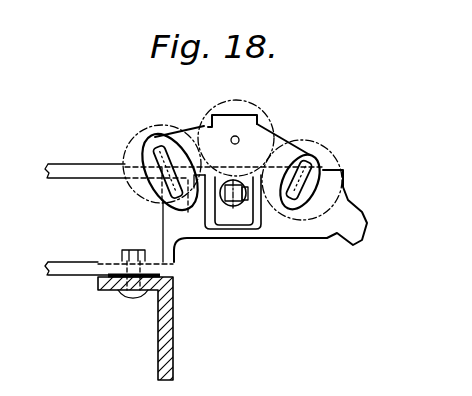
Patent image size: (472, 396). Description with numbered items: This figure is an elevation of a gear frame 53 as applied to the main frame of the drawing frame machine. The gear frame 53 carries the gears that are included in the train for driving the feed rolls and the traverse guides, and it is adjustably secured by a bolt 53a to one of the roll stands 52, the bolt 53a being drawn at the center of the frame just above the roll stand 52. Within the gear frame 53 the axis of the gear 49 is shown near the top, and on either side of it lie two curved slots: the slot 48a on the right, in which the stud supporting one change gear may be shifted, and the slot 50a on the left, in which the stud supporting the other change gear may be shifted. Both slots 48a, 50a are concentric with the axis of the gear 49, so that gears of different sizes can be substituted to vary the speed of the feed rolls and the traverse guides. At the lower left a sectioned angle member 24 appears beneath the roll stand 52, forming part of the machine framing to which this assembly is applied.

The angle frame member 24 is at (174, 327).
The slot 48a is at (313, 154).
The gear 49 is at (214, 104).
The slot 50a is at (157, 137).
The roll stand 52 is at (318, 240).
The gear frame 53 is at (274, 134).
The bolt 53a is at (233, 208).